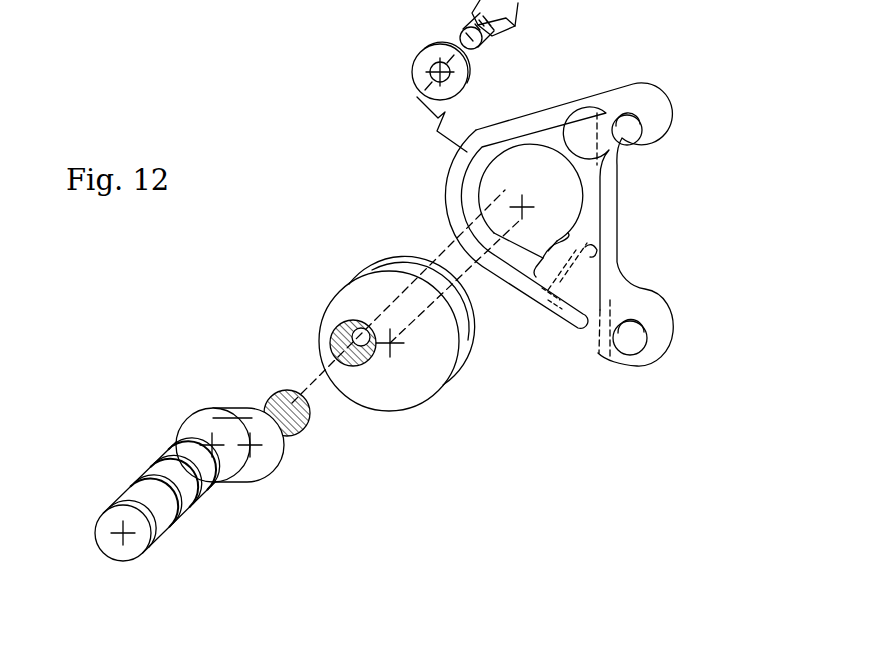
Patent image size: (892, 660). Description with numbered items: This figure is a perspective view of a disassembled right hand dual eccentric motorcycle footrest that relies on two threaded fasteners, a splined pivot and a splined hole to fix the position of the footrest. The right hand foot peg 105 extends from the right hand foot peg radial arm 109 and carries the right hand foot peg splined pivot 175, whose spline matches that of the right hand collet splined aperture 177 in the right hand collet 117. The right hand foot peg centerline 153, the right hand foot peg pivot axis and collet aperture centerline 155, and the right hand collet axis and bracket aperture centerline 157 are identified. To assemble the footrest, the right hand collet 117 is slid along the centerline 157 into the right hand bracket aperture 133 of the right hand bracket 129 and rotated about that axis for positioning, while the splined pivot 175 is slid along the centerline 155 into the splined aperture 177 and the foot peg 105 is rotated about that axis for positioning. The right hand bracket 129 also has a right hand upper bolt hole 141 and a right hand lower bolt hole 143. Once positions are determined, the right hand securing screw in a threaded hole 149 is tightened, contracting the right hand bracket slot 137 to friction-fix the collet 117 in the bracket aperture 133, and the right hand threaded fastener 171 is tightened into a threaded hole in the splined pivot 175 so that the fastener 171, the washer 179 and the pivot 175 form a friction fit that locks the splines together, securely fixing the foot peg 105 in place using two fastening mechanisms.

The right hand foot peg 105 is at (158, 462).
The right hand foot peg radial arm 109 is at (253, 477).
The right hand collet 117 is at (365, 265).
The right hand bracket 129 is at (624, 203).
The right hand bracket aperture 133 is at (460, 207).
The right hand bracket slot 137 is at (527, 298).
The right hand upper bolt hole 141 is at (628, 130).
The right hand lower bolt hole 143 is at (640, 340).
The right hand securing screw in a threaded hole 149 is at (555, 325).
The right hand foot peg centerline 153 is at (198, 460).
The right hand foot peg pivot axis and collet aperture centerline 155 is at (312, 383).
The right hand collet axis and bracket aperture centerline 157 is at (455, 268).
The right hand threaded fastener 171 is at (537, 13).
The right hand foot peg splined pivot 175 is at (282, 418).
The right hand collet splined aperture 177 is at (338, 328).
The washer 179 is at (483, 71).